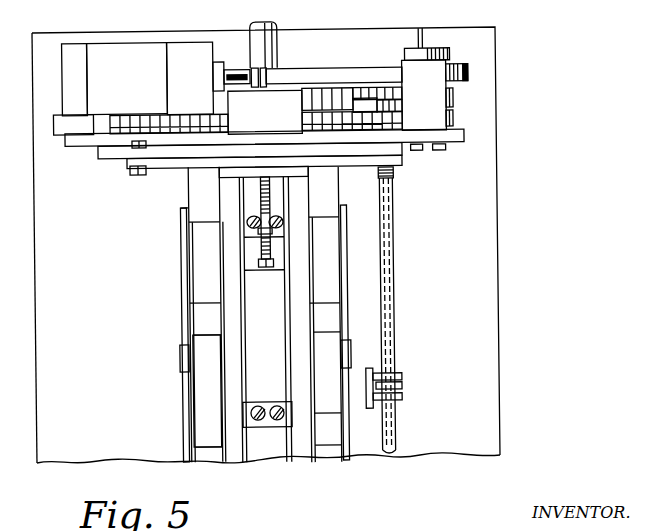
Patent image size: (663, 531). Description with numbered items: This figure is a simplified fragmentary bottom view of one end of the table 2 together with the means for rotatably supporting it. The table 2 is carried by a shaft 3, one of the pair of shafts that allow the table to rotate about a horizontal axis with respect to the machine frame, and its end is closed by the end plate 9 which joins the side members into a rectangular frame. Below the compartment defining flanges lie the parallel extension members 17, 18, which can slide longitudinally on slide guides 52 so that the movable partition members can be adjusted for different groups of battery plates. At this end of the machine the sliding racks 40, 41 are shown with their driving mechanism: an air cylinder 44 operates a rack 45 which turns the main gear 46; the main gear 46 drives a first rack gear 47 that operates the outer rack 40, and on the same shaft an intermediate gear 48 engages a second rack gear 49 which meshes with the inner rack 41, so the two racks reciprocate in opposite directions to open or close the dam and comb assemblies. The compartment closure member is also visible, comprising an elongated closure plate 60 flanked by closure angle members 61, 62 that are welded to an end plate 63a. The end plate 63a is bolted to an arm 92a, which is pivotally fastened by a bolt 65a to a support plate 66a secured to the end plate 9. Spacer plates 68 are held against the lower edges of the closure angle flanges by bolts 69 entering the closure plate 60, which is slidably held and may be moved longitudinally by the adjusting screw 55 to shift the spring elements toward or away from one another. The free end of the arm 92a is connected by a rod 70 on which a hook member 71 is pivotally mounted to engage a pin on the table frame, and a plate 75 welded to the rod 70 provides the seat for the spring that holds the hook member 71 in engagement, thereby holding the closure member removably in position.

The table 2 is at (503, 273).
The shaft 3 is at (275, 26).
The end plate 9 is at (446, 135).
The extension member 17 is at (186, 283).
The extension member 18 is at (344, 218).
The sliding rack 40 is at (327, 98).
The sliding rack 41 is at (117, 125).
The air cylinder 44 is at (125, 63).
The rack 45 is at (356, 76).
The main gear 46 is at (466, 73).
The first rack gear 47 is at (455, 98).
The intermediate gear 48 is at (455, 117).
The second rack gear 49 is at (404, 118).
The slide guide 52 is at (181, 363).
The adjusting screw 55 is at (271, 242).
The closure plate 60 is at (257, 285).
The closure angle member 61 is at (296, 360).
The closure angle member 62 is at (234, 360).
The end plate 63a is at (291, 171).
The bolt 65a is at (135, 177).
The support plate 66a is at (117, 153).
The spacer plate 68 is at (289, 408).
The bolt 69 is at (261, 421).
The rod 70 is at (394, 272).
The hook member 71 is at (405, 384).
The plate 75 is at (370, 368).
The arm 92a is at (177, 163).